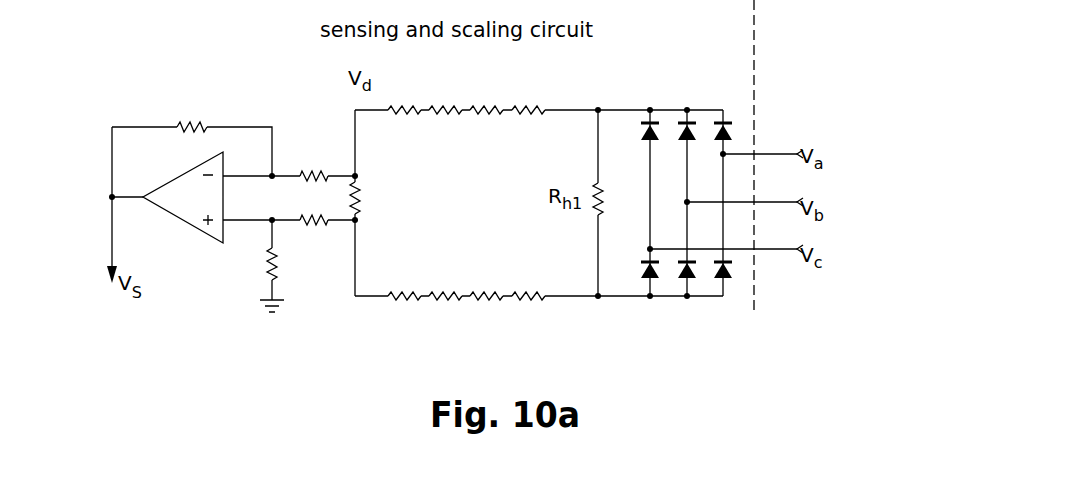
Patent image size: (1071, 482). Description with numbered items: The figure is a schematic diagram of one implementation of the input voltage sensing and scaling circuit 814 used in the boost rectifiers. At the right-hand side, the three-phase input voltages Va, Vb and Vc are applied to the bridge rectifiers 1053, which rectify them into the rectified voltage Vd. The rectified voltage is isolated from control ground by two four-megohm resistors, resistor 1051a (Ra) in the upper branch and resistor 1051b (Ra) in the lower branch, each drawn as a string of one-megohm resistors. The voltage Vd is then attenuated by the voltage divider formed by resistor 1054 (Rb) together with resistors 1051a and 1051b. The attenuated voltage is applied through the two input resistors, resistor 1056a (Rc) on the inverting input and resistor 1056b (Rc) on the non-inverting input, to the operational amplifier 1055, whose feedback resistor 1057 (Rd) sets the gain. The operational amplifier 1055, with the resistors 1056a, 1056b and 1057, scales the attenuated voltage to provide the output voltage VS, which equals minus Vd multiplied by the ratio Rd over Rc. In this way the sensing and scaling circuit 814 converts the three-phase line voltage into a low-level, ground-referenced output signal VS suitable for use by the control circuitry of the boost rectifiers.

The resistor Rd 1057 is at (200, 122).
The resistor Rc 1056a is at (323, 172).
The resistor Rc 1056b is at (328, 223).
The resistor Rb 1054 is at (365, 203).
The operational amplifier 1055 is at (192, 227).
The 4 MΩ resistor Ra 1051a is at (550, 116).
The 4 MΩ resistor Ra 1051b is at (550, 302).
The bridge rectifiers 1053 is at (670, 325).
The input voltage sensing and scaling circuit 814 is at (806, 78).